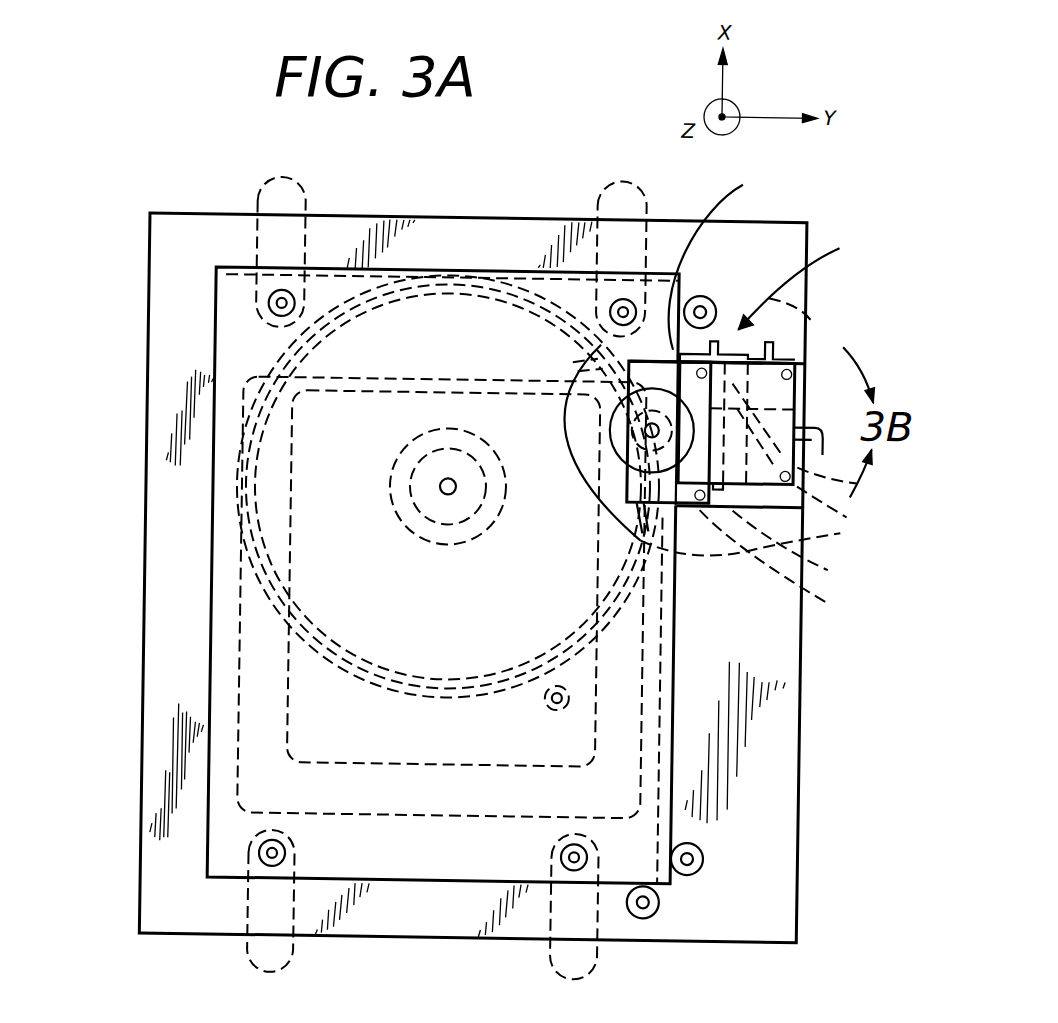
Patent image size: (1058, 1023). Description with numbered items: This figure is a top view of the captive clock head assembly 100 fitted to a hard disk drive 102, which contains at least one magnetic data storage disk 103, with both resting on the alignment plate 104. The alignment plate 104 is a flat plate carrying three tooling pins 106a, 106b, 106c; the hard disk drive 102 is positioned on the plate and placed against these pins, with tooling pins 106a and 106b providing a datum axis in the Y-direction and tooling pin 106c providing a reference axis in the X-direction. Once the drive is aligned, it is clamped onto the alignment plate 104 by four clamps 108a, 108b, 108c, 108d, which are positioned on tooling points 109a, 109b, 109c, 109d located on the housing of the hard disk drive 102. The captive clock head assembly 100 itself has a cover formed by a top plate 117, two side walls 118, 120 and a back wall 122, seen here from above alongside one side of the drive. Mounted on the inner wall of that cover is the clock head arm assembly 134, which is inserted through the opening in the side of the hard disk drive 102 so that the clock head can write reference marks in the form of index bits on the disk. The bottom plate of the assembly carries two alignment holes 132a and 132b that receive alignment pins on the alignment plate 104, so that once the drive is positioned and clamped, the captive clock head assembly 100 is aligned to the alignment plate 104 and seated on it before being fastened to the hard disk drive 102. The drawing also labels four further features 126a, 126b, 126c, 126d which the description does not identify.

The captive clock head assembly 100 is at (810, 281).
The hard disk drive 102 is at (214, 632).
The magnetic data storage disk 103 is at (302, 350).
The alignment plate 104 is at (148, 725).
The tooling pin 106a is at (729, 286).
The tooling pin 106b is at (697, 851).
The tooling pin 106c is at (653, 895).
The clamp 108a is at (306, 193).
The clamp 108b is at (608, 951).
The clamp 108c is at (258, 944).
The clamp 108d is at (648, 203).
The tooling point 109a is at (283, 301).
The tooling point 109b is at (596, 845).
The tooling point 109c is at (281, 851).
The tooling point 109d is at (618, 293).
The top plate 117 is at (664, 497).
The side wall 118 is at (762, 341).
The side wall 120 is at (812, 523).
The back wall 122 is at (802, 367).
The flex circuit position 126a is at (833, 593).
The flex circuit position 126b is at (839, 500).
The flex circuit position 126c is at (836, 327).
The flex circuit position 126d is at (738, 263).
The alignment hole 132a is at (825, 557).
The alignment hole 132b is at (572, 354).
The clock head arm assembly 134 is at (859, 474).